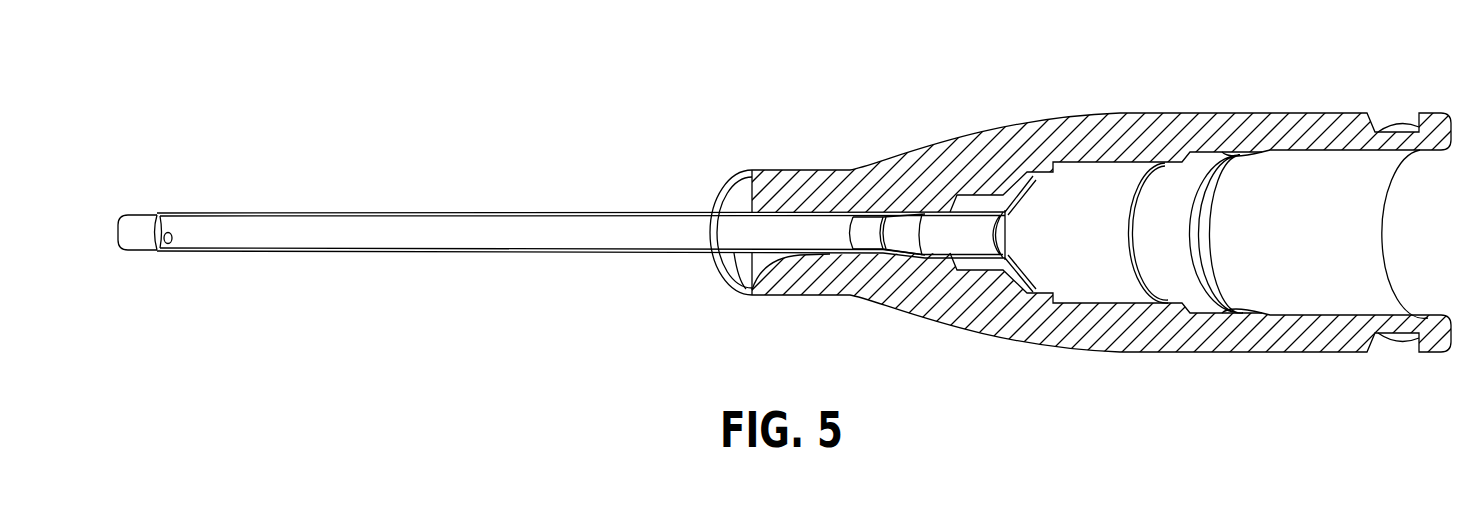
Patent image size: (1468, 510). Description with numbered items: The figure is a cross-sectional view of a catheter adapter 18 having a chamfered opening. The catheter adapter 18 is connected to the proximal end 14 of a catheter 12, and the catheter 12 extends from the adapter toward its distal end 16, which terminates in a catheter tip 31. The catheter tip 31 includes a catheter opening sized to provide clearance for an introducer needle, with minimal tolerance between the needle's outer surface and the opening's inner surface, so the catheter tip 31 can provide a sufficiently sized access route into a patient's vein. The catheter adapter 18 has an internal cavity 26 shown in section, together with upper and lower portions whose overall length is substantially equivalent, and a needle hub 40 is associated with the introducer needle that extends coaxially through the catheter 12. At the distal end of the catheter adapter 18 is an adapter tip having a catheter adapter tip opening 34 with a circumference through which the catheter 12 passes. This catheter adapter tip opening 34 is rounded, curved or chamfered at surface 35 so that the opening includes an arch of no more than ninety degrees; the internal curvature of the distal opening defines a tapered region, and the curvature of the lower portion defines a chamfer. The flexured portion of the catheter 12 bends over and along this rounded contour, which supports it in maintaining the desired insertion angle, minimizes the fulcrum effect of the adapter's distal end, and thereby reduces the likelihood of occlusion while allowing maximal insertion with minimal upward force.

The catheter 12 is at (380, 212).
The proximal end 14 is at (744, 206).
The distal end 16 is at (165, 174).
The catheter adapter 18 is at (1064, 70).
The internal cavity 26 is at (1413, 263).
The catheter tip 31 is at (118, 240).
The catheter adapter tip opening 34 is at (727, 286).
The surface 35 is at (797, 268).
The needle hub 40 is at (977, 236).